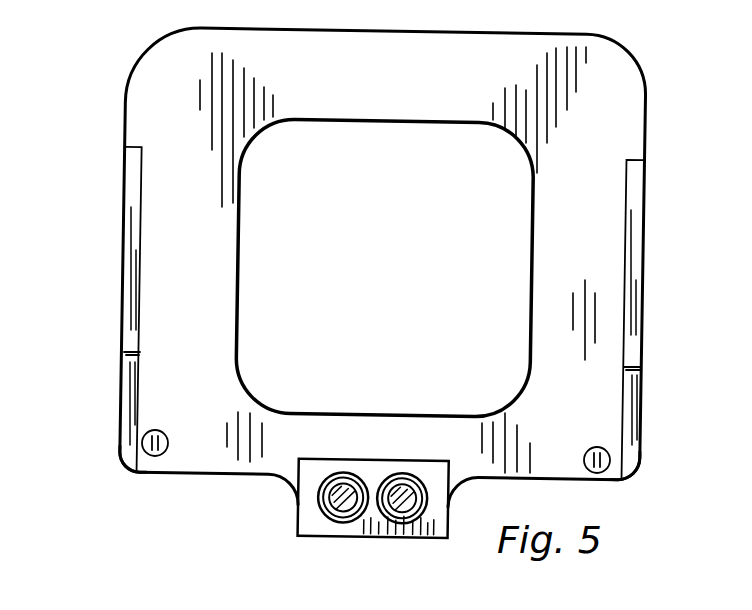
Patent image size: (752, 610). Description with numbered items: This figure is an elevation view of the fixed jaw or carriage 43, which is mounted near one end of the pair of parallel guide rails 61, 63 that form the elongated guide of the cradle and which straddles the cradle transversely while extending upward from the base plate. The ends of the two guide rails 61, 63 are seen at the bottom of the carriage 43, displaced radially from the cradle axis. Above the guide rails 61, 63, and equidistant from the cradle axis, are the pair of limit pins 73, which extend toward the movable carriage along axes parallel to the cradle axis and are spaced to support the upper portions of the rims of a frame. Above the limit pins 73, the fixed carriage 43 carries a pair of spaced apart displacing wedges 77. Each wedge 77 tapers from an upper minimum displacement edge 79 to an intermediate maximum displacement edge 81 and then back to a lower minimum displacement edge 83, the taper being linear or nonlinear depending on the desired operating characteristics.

The fixed jaw or carriage 43 is at (617, 82).
The upper minimum displacement edge 79 is at (127, 153).
The displacing wedges 77 is at (135, 227).
The intermediate maximum displacement edge 81 is at (128, 358).
The limit pins 73 is at (148, 443).
The lower minimum displacement edge 83 is at (128, 453).
The guide rail 61 is at (348, 500).
The guide rail 63 is at (408, 498).